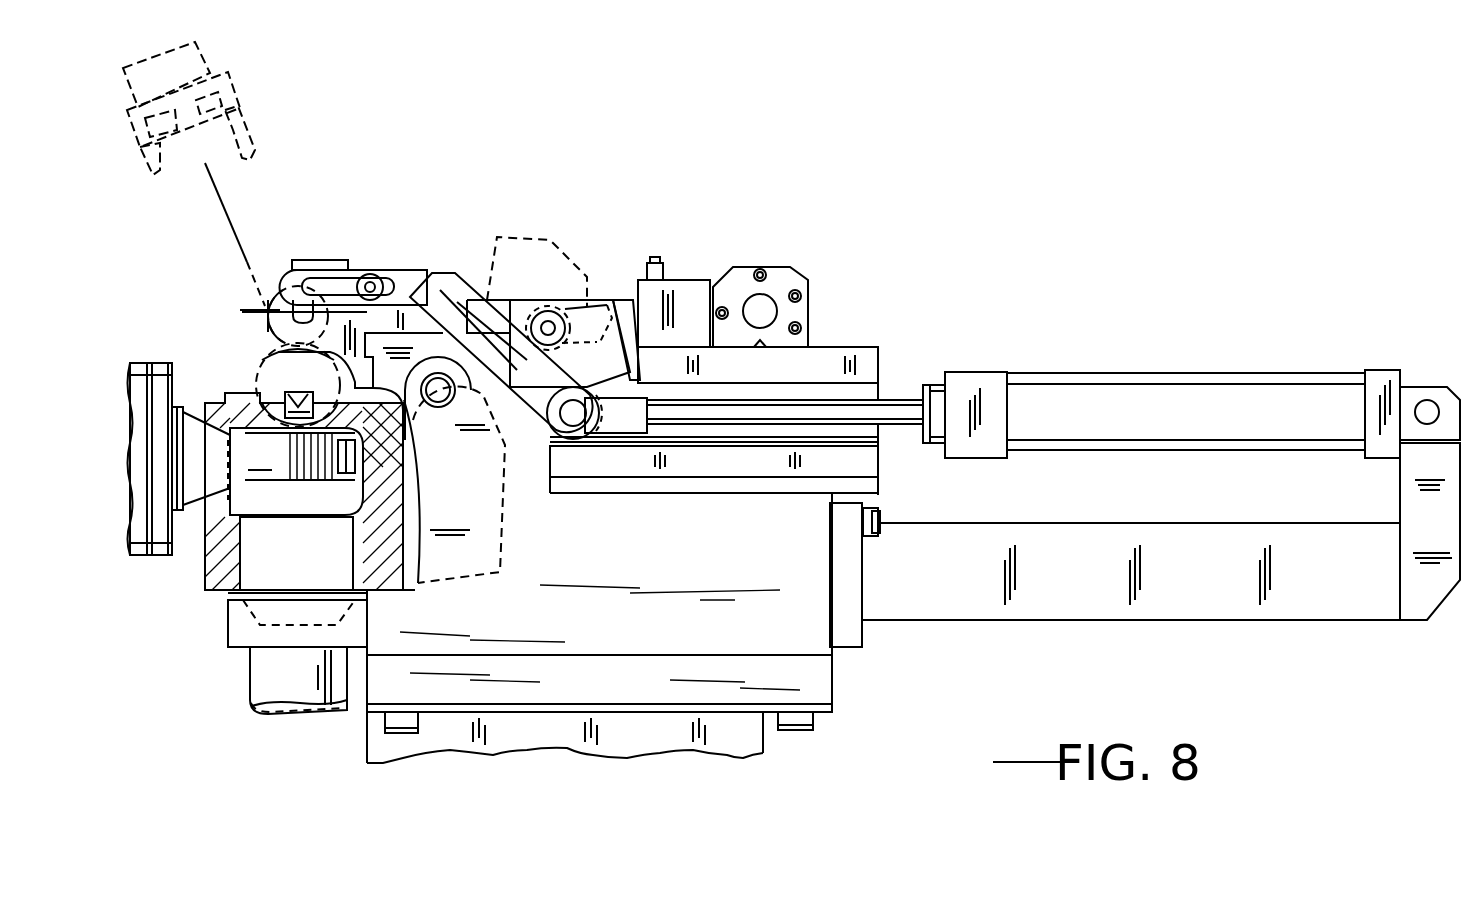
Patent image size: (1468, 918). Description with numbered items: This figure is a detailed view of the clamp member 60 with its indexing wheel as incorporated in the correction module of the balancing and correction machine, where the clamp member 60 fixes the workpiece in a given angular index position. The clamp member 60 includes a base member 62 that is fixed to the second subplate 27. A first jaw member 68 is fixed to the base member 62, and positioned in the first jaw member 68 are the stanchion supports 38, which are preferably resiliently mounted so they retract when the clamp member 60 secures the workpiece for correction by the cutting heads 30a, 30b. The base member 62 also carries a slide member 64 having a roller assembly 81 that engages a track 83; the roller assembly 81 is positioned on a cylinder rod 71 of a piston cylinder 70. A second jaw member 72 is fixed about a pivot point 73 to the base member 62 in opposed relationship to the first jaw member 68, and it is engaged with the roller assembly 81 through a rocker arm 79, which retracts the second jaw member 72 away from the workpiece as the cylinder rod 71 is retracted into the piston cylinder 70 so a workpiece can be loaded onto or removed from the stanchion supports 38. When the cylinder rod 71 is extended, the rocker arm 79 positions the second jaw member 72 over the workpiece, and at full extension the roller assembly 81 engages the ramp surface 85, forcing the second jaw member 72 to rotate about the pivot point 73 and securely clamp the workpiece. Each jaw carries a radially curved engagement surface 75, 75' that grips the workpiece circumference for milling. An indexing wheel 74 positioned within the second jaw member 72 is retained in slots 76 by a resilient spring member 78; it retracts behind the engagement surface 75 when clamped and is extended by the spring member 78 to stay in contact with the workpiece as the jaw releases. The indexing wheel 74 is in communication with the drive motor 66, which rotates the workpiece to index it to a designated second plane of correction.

The second subplate 27 is at (385, 722).
The cutting head 30a is at (335, 482).
The cutting head 30b is at (275, 623).
The stanchion supports 38 is at (316, 398).
The clamp member 60 is at (215, 358).
The base member 62 is at (785, 633).
The slide member 64 is at (852, 467).
The drive motor 66 is at (787, 262).
The first jaw member 68 is at (377, 525).
The piston cylinder 70 is at (1070, 407).
The cylinder rod 71 is at (892, 402).
The second jaw member 72 is at (373, 313).
The pivot point 73 is at (478, 300).
The indexing wheel 74 is at (270, 304).
The engagement surface 75 is at (251, 366).
The engagement surface 75' is at (359, 491).
The slots 76 is at (328, 300).
The resilient spring member 78 is at (268, 305).
The rocker arm 79 is at (485, 398).
The roller assembly 81 is at (522, 398).
The track 83 is at (717, 443).
The ramp surface 85 is at (587, 373).